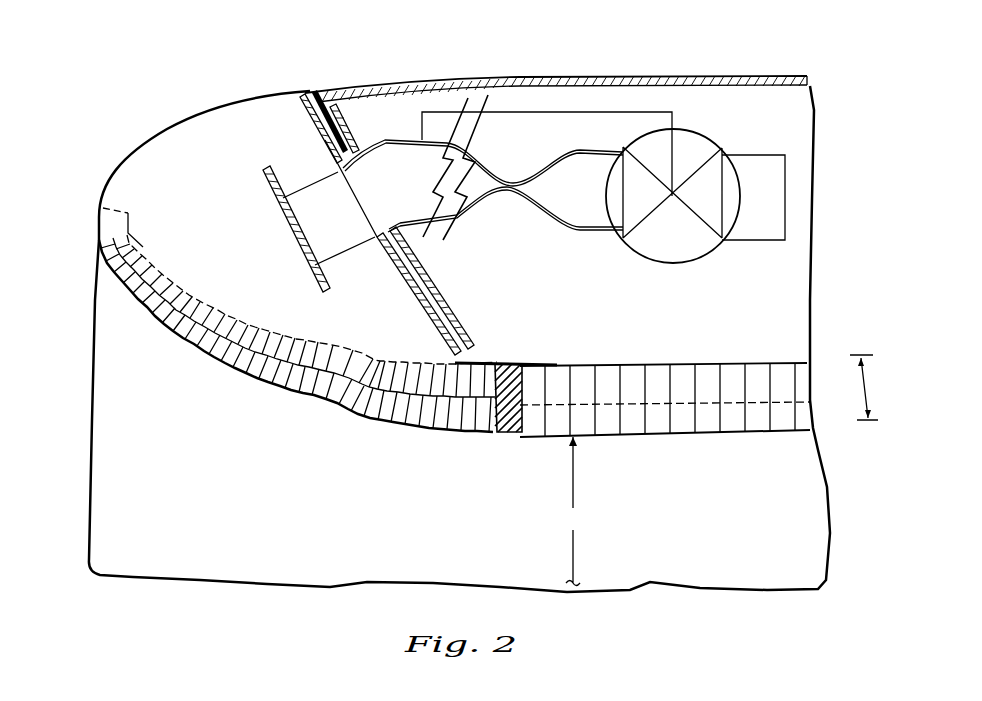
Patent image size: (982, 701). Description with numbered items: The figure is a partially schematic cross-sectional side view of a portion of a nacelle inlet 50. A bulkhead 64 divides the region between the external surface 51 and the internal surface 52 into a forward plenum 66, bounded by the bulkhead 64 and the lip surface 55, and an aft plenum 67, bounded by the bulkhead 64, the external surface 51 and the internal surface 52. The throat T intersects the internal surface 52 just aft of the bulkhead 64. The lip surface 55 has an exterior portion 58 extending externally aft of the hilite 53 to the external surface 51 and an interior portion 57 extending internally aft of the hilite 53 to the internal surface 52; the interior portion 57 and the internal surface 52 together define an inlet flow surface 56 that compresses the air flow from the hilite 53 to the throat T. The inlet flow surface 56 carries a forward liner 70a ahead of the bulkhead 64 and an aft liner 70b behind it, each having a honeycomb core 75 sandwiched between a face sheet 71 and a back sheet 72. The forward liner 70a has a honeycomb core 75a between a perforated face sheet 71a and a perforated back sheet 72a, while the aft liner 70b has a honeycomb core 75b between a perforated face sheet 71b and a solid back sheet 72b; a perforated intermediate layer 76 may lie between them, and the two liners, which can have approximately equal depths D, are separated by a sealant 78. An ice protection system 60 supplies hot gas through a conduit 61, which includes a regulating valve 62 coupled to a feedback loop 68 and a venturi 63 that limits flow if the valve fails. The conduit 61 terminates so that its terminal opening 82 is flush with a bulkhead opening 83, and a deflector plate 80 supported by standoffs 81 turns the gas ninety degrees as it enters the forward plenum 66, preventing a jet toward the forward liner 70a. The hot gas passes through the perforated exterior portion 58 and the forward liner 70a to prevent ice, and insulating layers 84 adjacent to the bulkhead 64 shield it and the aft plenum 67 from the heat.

The inlet 50 is at (92, 372).
The external surface 51 is at (497, 73).
The internal surface 52 is at (603, 443).
The hilite 53 is at (100, 222).
The lip surface 55 is at (112, 178).
The inlet flow surface 56 is at (520, 485).
The interior portion 57 is at (162, 333).
The exterior portion 58 is at (185, 128).
The ice protection system 60 is at (641, 112).
The conduit 61 is at (383, 138).
The regulating valve 62 is at (688, 129).
The venturi 63 is at (540, 203).
The bulkhead 64 is at (433, 303).
The forward plenum 66 is at (230, 135).
The aft plenum 67 is at (757, 117).
The feedback loop 68 is at (577, 112).
The forward liner 70a is at (323, 403).
The aft liner 70b is at (697, 442).
The face sheet 71 is at (546, 444).
The perforated face sheet 71a is at (267, 385).
The perforated face sheet 71b is at (813, 428).
The back sheet 72 is at (540, 362).
The perforated back sheet 72a is at (267, 312).
The solid back sheet 72b is at (760, 365).
The honeycomb core 75 is at (530, 393).
The honeycomb core 75a is at (300, 335).
The honeycomb core 75b is at (640, 390).
The perforated intermediate layer 76 is at (210, 313).
The sealant 78 is at (500, 430).
The deflector plate 80 is at (262, 184).
The standoffs 81 is at (293, 187).
The terminal opening 82 is at (330, 162).
The bulkhead opening 83 is at (347, 112).
The insulating layers 84 is at (422, 268).
The throat T is at (572, 511).
The depth D is at (868, 383).